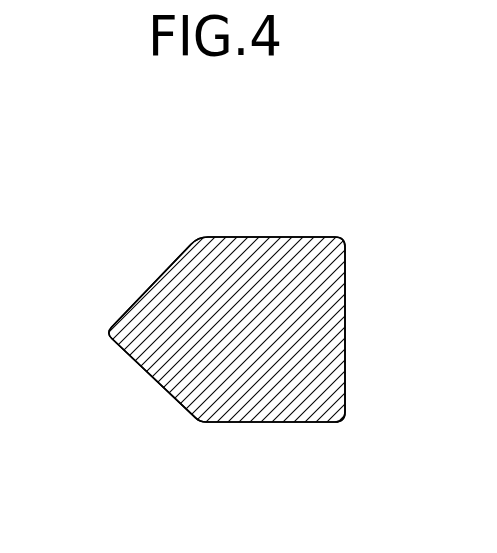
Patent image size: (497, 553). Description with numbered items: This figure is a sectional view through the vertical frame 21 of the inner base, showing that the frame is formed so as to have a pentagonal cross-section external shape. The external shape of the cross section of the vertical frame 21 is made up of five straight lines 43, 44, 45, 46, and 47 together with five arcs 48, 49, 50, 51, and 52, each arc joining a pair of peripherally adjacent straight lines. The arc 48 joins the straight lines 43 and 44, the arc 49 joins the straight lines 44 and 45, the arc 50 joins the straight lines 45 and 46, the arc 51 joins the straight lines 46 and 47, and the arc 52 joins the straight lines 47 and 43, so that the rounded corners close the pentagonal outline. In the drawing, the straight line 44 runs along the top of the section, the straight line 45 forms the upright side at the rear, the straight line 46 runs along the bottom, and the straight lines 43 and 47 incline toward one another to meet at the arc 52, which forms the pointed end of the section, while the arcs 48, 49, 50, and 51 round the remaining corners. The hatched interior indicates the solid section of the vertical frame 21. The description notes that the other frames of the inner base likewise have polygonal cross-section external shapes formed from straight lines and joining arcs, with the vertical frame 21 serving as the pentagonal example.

The vertical frame 21 is at (310, 329).
The straight line 43 is at (145, 278).
The straight line 44 is at (277, 238).
The straight line 45 is at (347, 290).
The straight line 46 is at (277, 422).
The straight line 47 is at (145, 385).
The arc 48 is at (202, 238).
The arc 49 is at (338, 240).
The arc 50 is at (338, 420).
The arc 51 is at (198, 422).
The arc 52 is at (112, 333).